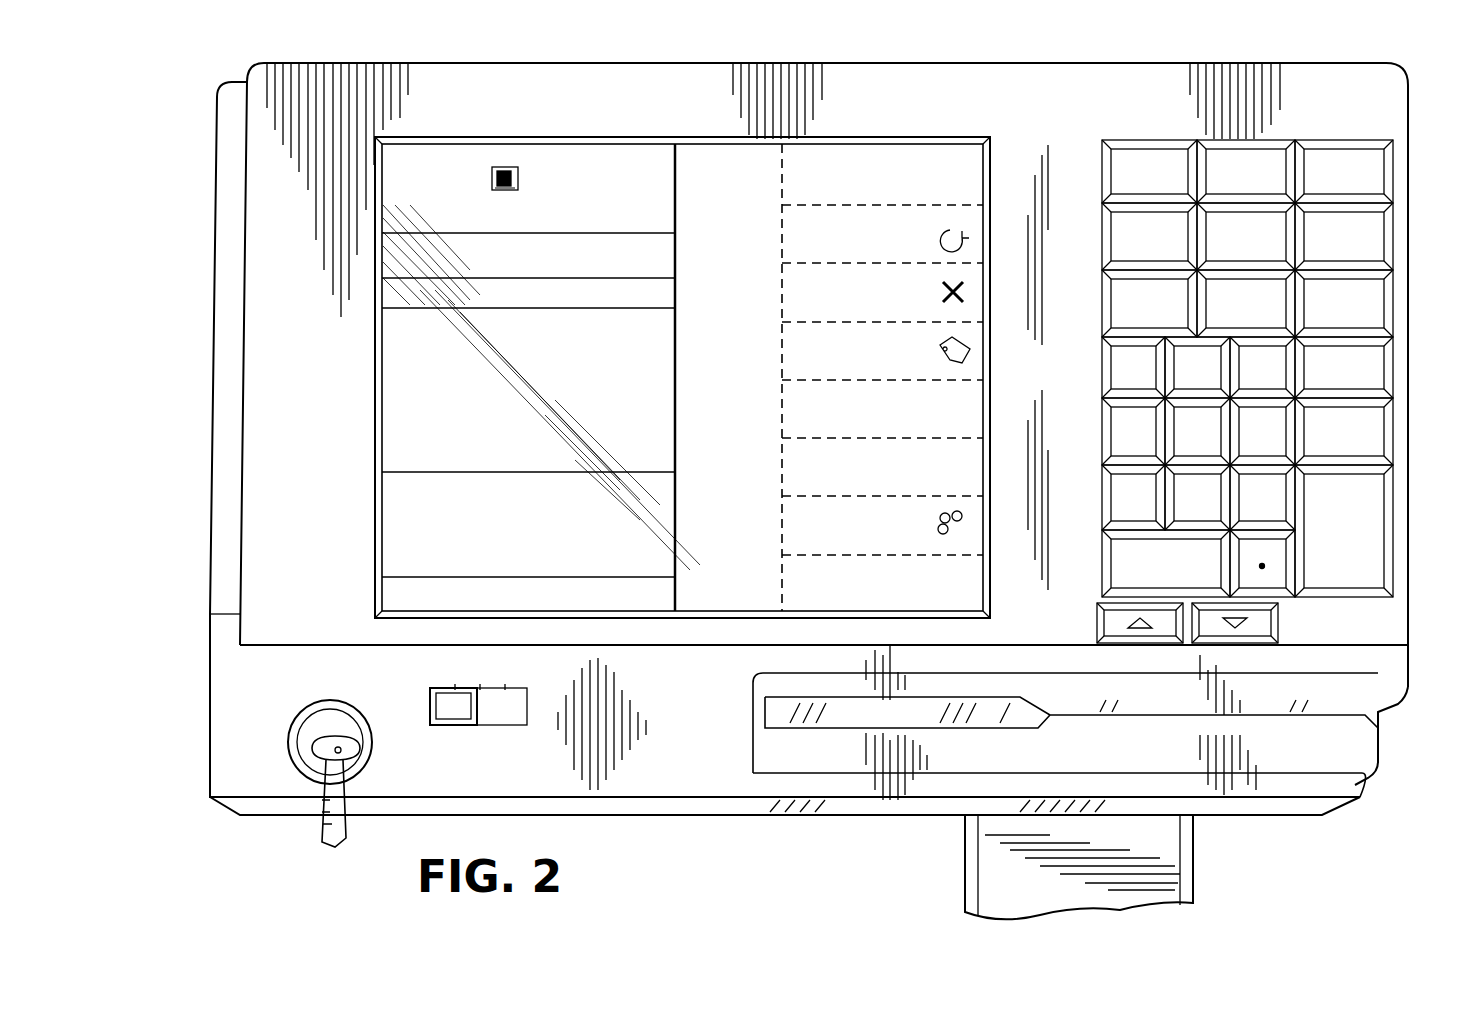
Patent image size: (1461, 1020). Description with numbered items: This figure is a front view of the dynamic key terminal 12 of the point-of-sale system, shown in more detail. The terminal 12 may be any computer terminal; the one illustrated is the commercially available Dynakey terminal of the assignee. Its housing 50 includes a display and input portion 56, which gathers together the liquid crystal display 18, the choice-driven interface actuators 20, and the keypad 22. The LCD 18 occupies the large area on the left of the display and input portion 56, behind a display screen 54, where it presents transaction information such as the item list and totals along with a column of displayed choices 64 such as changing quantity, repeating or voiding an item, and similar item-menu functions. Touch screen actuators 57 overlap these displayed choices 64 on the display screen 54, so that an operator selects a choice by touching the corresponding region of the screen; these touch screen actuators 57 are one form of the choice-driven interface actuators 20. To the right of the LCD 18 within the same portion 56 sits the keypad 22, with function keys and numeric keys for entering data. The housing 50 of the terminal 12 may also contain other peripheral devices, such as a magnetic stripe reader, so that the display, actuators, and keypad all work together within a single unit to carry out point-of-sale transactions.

The terminal 12 is at (212, 118).
The liquid crystal display 18 is at (398, 437).
The choice-driven interface actuators 20 is at (822, 394).
The keypad 22 is at (1375, 138).
The housing 50 is at (210, 530).
The display screen 54 is at (990, 140).
The display and input portion 56 is at (272, 268).
The touch screen actuators 57 is at (795, 598).
The displayed choices 64 is at (960, 156).